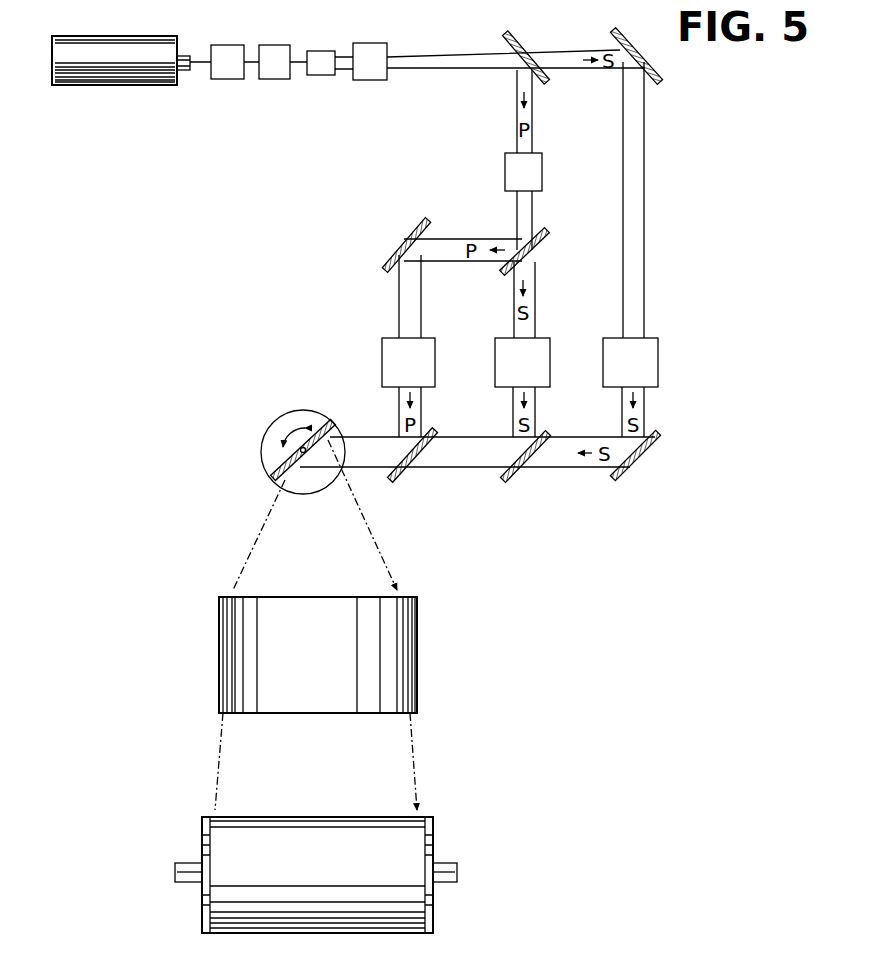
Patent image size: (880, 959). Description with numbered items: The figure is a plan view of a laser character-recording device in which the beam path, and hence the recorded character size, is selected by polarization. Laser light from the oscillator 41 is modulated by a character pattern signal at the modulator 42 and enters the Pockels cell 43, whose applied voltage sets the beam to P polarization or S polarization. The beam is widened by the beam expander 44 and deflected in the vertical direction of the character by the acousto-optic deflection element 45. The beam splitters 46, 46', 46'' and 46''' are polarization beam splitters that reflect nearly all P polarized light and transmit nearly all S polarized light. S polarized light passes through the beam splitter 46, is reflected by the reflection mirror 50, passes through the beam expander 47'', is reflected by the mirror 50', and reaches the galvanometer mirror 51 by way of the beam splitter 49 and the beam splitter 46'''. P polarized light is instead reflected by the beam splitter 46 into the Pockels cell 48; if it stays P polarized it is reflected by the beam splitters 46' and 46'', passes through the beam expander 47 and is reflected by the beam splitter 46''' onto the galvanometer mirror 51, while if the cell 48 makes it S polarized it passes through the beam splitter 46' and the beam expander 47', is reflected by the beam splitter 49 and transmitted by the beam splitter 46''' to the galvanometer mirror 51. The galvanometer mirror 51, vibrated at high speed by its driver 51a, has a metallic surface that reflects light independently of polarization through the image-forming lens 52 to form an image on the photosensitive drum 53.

The oscillator 41 is at (107, 86).
The modulator 42 is at (219, 80).
The Pockels cell 43 is at (271, 80).
The beam expander 44 is at (320, 76).
The acousto-optic deflection element 45 is at (370, 81).
The beam splitter 46 is at (538, 48).
The beam splitter 46' is at (549, 252).
The beam splitter 46'' is at (376, 242).
The beam splitter 46''' is at (432, 472).
The beam expander 47 is at (408, 362).
The beam expander 47' is at (522, 362).
The beam expander 47'' is at (630, 362).
The Pockels cell 48 is at (504, 168).
The beam splitter 49 is at (533, 457).
The reflection mirror 50 is at (668, 61).
The mirror 50' is at (657, 455).
The galvanometer mirror 51 is at (283, 460).
The driver 51a is at (292, 425).
The image-forming lens 52 is at (403, 645).
The photosensitive drum 53 is at (348, 825).